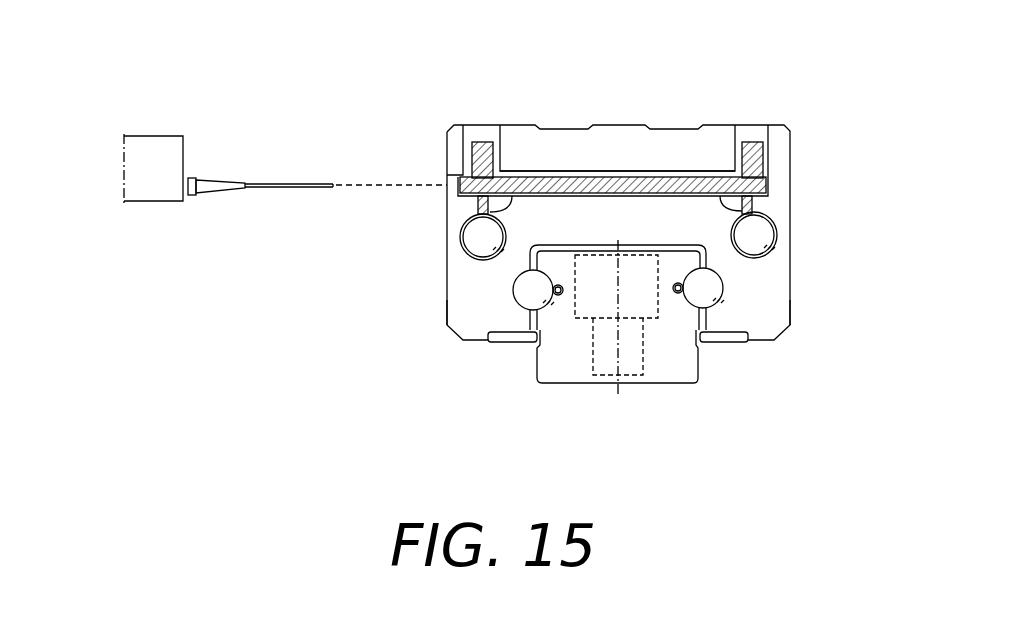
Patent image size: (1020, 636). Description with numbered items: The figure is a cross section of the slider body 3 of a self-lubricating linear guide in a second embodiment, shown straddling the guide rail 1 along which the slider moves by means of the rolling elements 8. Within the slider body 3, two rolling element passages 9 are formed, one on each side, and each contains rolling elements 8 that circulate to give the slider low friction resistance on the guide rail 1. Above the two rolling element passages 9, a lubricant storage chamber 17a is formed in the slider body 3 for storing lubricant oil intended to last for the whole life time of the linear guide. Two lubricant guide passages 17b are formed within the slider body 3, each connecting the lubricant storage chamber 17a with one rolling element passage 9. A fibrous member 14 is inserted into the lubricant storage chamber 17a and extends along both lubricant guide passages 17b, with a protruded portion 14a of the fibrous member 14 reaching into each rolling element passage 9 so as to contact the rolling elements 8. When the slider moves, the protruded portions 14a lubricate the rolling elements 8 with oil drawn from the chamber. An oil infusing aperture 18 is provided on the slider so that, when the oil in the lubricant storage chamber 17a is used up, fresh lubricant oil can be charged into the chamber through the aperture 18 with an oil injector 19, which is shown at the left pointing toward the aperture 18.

The guide rail 1 is at (570, 355).
The slider body 3 is at (750, 308).
The rolling elements 8 is at (480, 245).
The rolling element passage 9 is at (461, 241).
The fibrous member 14 is at (678, 180).
The protruded portion of the fibrous member 14a is at (508, 200).
The lubricant storage chamber 17a is at (547, 176).
The lubricant guide passage 17b is at (476, 206).
The oil infusing aperture 18 is at (447, 175).
The oil injector 19 is at (163, 160).